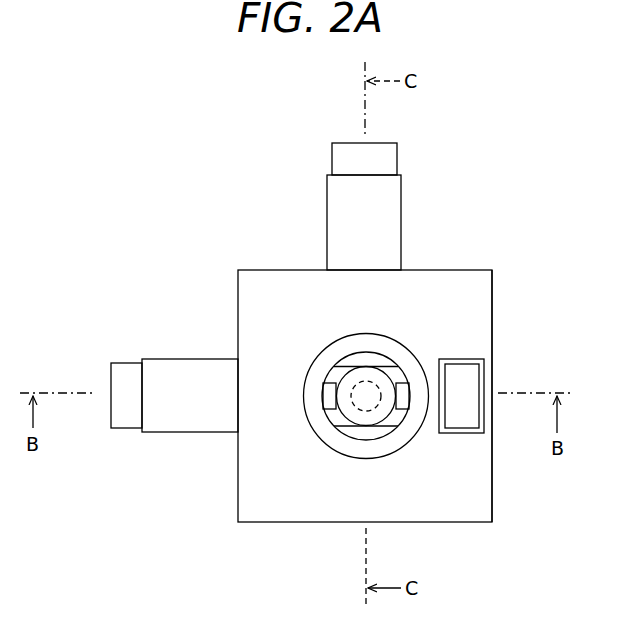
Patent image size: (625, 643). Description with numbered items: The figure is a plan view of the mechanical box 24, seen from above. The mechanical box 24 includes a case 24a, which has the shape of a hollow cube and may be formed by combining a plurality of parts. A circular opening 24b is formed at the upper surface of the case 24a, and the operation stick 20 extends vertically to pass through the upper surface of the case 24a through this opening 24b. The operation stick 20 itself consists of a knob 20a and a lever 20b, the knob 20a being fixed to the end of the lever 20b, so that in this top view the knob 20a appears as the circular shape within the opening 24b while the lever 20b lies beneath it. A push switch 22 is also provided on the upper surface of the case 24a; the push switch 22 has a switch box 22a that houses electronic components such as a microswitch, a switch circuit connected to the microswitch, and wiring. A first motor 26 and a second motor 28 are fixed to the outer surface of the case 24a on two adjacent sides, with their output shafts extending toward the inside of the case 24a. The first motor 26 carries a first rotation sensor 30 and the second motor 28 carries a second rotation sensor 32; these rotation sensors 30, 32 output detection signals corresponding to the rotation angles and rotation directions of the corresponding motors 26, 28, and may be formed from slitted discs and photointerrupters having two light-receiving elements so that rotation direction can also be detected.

The operation stick 20 is at (380, 360).
The knob 20a is at (352, 370).
The lever 20b is at (353, 394).
The push switch 22 is at (462, 418).
The switch box 22a is at (462, 433).
The mechanical box 24 is at (208, 238).
The case 24a is at (485, 332).
The circular opening 24b is at (345, 430).
The first motor 26 is at (182, 368).
The second motor 28 is at (397, 207).
The first rotation sensor 30 is at (125, 370).
The second rotation sensor 32 is at (390, 150).